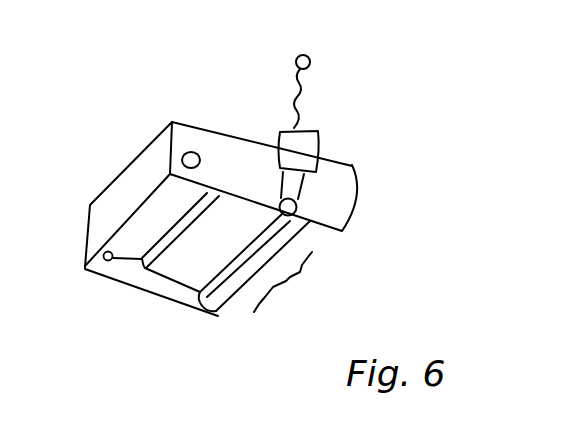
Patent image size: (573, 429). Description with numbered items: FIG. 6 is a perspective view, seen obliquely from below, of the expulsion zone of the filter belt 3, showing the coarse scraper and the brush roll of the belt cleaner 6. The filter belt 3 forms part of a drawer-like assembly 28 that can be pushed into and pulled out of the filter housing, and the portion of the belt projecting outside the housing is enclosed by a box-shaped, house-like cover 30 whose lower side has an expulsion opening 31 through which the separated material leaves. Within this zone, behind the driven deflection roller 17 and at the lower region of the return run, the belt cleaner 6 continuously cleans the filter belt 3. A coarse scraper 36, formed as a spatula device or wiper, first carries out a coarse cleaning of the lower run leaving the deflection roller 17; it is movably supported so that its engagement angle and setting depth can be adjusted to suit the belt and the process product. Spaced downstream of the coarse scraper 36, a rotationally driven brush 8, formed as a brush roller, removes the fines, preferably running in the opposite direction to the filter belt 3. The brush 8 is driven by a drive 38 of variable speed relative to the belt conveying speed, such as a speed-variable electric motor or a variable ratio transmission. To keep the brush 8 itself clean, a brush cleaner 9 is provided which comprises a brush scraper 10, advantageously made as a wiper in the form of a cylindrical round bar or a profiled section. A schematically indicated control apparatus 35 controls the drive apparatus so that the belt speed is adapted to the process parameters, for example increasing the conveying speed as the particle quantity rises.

The filter belt 3 is at (148, 213).
The belt cleaner 6 is at (277, 252).
The brush 8 is at (240, 295).
The brush cleaner 9 is at (205, 298).
The brush scraper 10 is at (230, 277).
The deflection roller 17 is at (108, 275).
The drawer-like assembly 28 is at (217, 125).
The cover 30 is at (188, 130).
The expulsion opening 31 is at (168, 287).
The control apparatus 35 is at (310, 58).
The coarse scraper 36 is at (230, 210).
The drive 38 is at (318, 140).